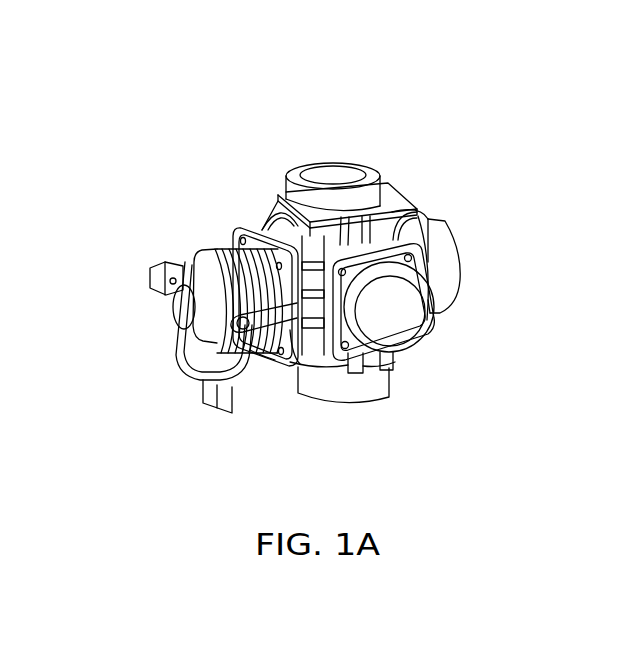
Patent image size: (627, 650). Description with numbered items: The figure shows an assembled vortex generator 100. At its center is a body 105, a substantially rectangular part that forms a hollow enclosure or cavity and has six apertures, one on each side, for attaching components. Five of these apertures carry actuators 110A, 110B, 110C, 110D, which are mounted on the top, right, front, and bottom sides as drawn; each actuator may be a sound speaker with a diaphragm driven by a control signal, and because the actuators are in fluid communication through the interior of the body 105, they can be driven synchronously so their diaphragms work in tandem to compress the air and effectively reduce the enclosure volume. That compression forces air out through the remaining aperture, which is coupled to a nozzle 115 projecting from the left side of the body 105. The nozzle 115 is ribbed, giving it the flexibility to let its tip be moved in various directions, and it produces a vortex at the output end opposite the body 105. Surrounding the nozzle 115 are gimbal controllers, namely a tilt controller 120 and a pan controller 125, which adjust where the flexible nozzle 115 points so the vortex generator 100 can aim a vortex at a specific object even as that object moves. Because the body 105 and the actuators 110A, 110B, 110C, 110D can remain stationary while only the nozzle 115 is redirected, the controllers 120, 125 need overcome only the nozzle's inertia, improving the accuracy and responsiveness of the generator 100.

The vortex generator 100 is at (438, 94).
The body 105 is at (406, 212).
The actuator 110A is at (331, 160).
The actuator 110B is at (458, 244).
The actuator 110C is at (422, 338).
The actuator 110D is at (373, 398).
The nozzle 115 is at (222, 249).
The tilt controller 120 is at (192, 372).
The pan controller 125 is at (263, 363).